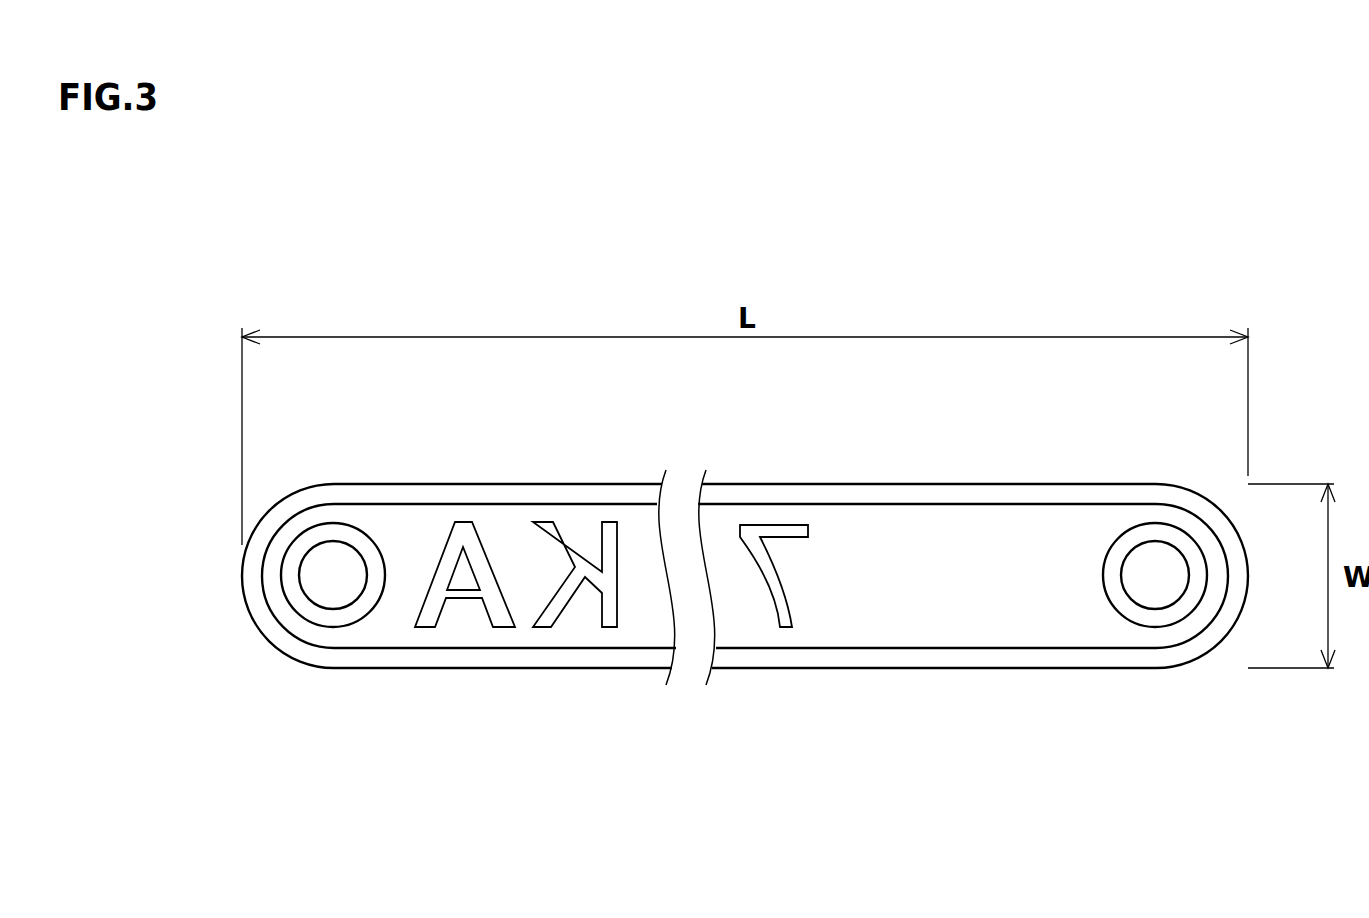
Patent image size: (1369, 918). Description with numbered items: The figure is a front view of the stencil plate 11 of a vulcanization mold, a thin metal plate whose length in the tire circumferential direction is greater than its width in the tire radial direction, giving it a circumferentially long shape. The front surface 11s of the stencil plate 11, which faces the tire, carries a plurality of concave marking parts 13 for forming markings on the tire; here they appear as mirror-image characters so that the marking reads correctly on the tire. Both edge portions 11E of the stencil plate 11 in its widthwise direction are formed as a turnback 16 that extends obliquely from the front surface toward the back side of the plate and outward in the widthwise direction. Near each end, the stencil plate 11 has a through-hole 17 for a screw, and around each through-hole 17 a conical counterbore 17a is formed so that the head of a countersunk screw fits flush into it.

The stencil plate 11 is at (729, 581).
The front surface 11s is at (1058, 600).
The edge portions 11E is at (589, 493).
The concave marking part 13 is at (878, 622).
The turnback 16 is at (745, 581).
The through-hole 17 is at (706, 652).
The conical counterbore 17a is at (297, 597).